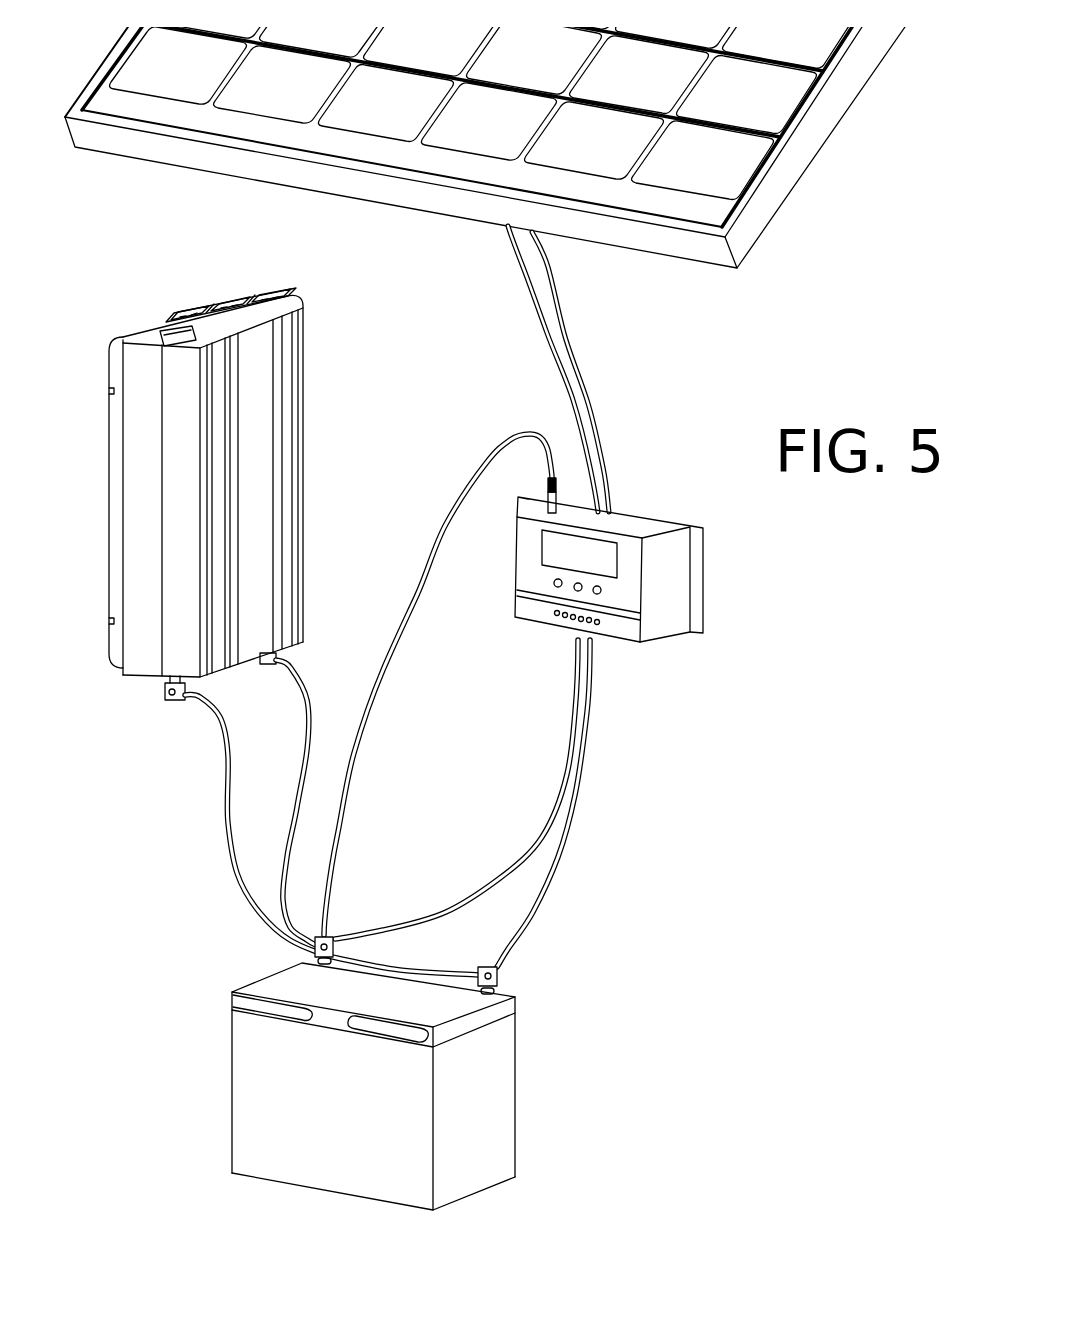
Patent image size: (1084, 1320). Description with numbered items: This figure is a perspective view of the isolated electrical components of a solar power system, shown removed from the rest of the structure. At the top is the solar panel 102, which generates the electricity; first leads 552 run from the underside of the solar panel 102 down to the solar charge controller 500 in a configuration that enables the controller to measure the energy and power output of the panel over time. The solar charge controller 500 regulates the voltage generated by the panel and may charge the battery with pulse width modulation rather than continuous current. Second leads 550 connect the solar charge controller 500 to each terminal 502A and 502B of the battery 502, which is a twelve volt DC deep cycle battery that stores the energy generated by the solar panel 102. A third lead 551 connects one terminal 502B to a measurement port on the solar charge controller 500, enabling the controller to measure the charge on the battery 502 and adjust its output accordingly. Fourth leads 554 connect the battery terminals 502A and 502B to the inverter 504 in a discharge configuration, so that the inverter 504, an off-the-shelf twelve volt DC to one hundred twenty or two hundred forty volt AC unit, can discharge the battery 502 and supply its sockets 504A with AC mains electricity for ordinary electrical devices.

The solar panel 102 is at (700, 157).
The solar charge controller 500 is at (658, 595).
The battery 502 is at (495, 1120).
The battery terminal 502A is at (498, 982).
The battery terminal 502B is at (310, 955).
The inverter 504 is at (257, 400).
The sockets 504A is at (253, 290).
The second leads 550 is at (550, 870).
The third lead 551 is at (412, 603).
The first leads 552 is at (577, 357).
The fourth leads 554 is at (300, 727).